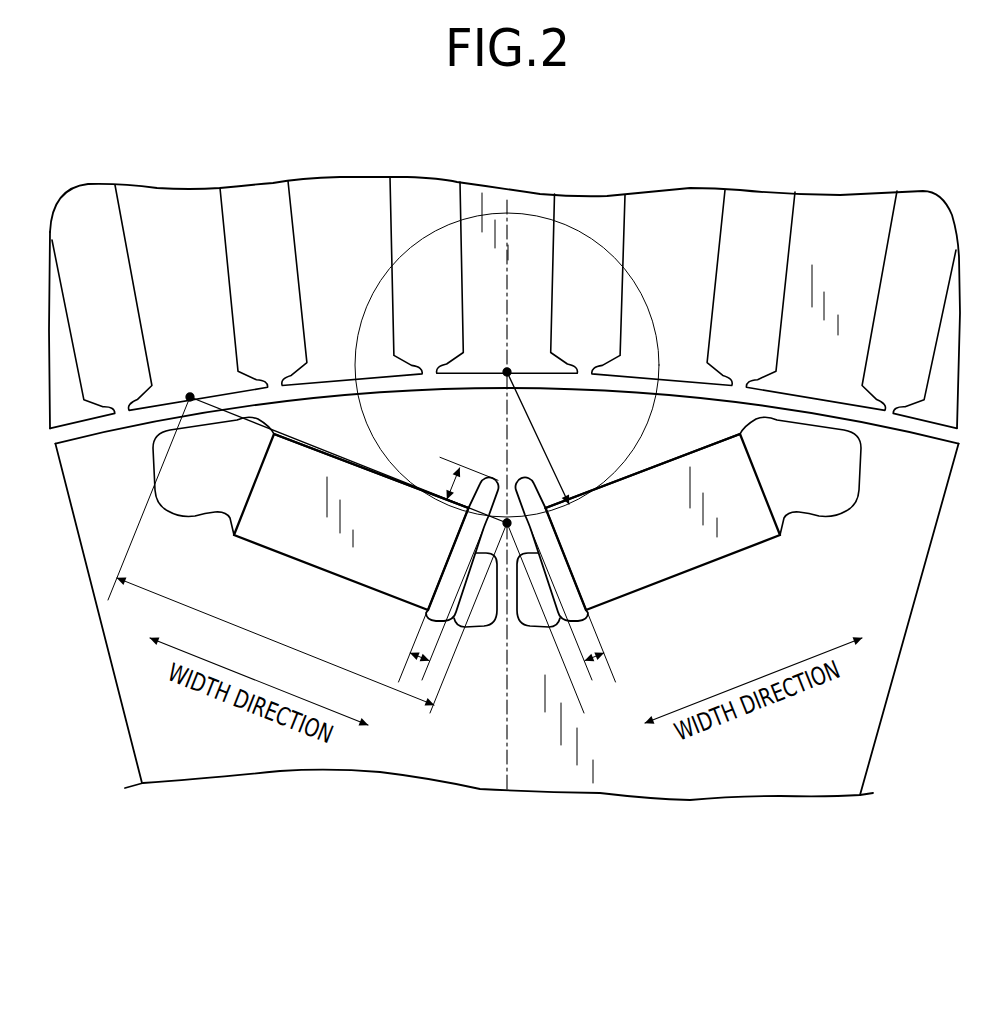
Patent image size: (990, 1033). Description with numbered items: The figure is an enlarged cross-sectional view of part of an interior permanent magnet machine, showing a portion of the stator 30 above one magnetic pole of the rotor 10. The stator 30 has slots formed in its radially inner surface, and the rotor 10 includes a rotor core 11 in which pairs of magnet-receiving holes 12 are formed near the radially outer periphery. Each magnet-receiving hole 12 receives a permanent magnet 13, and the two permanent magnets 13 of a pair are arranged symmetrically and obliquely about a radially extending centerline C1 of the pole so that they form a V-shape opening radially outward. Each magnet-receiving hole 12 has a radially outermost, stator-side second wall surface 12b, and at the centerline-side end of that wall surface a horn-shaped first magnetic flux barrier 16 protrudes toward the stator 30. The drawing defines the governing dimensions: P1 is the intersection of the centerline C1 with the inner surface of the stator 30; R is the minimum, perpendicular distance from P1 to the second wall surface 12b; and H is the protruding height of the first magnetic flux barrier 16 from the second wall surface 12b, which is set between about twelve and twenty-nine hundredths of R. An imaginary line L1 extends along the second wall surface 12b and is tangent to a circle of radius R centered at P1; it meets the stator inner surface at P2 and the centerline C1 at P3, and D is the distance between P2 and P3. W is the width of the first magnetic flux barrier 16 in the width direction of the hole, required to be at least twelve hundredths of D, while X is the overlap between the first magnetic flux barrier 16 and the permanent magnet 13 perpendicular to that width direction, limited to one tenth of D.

The stator 30 is at (186, 182).
The rotor 10 is at (494, 594).
The rotor core 11 is at (158, 727).
The magnet-receiving hole 12 is at (507, 528).
The second wall surface 12b is at (338, 457).
The permanent magnet 13 is at (507, 531).
The first magnetic flux barrier 16 is at (492, 476).
The centerline of the magnetic pole C1 is at (505, 496).
The imaginary line L1 is at (366, 462).
The intersection P1 is at (493, 357).
The intersection P2 is at (193, 384).
The intersection P3 is at (503, 524).
The minimum distance R is at (507, 365).
The protruding height H is at (461, 478).
The distance D is at (307, 555).
The width of the first magnetic flux barrier W is at (441, 610).
The overlapping width X is at (561, 618).